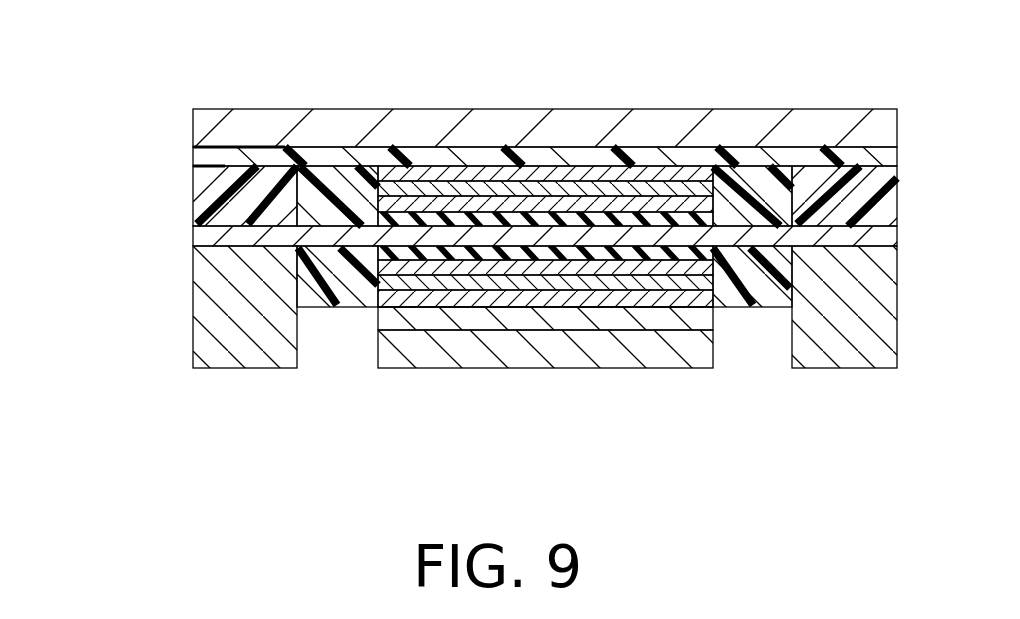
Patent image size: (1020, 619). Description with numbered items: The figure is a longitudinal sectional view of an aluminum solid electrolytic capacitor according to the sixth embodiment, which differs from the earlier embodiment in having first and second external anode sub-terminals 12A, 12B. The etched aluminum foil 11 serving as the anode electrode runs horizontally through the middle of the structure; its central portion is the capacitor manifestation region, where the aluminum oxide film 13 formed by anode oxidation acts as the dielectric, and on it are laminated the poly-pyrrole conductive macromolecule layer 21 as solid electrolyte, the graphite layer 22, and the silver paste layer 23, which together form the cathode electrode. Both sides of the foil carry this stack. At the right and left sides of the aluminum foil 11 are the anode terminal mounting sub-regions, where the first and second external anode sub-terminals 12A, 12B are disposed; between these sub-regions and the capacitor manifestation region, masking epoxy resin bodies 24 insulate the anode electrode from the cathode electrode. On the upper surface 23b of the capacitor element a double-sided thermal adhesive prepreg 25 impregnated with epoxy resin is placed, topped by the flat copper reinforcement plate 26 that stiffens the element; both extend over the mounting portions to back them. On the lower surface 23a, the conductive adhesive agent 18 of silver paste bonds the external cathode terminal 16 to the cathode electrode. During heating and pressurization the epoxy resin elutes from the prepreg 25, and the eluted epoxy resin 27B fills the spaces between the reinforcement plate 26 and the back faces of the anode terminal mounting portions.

The aluminum foil 11 is at (205, 238).
The first external anode sub-terminal 12A is at (243, 347).
The second external anode sub-terminal 12B is at (848, 347).
The aluminum oxide film 13 is at (698, 218).
The external cathode terminal 16 is at (543, 350).
The conductive adhesive agent 18 is at (397, 313).
The conductive macromolecule layer 21 is at (570, 205).
The graphite layer 22 is at (513, 190).
The silver paste layer 23 is at (413, 178).
The lower surface 23a is at (686, 296).
The upper surface 23b is at (630, 176).
The masking epoxy resin body 24 is at (340, 186).
The prepreg 25 is at (250, 156).
The reinforcement plate 26 is at (440, 135).
The eluted epoxy resin 27B is at (200, 195).